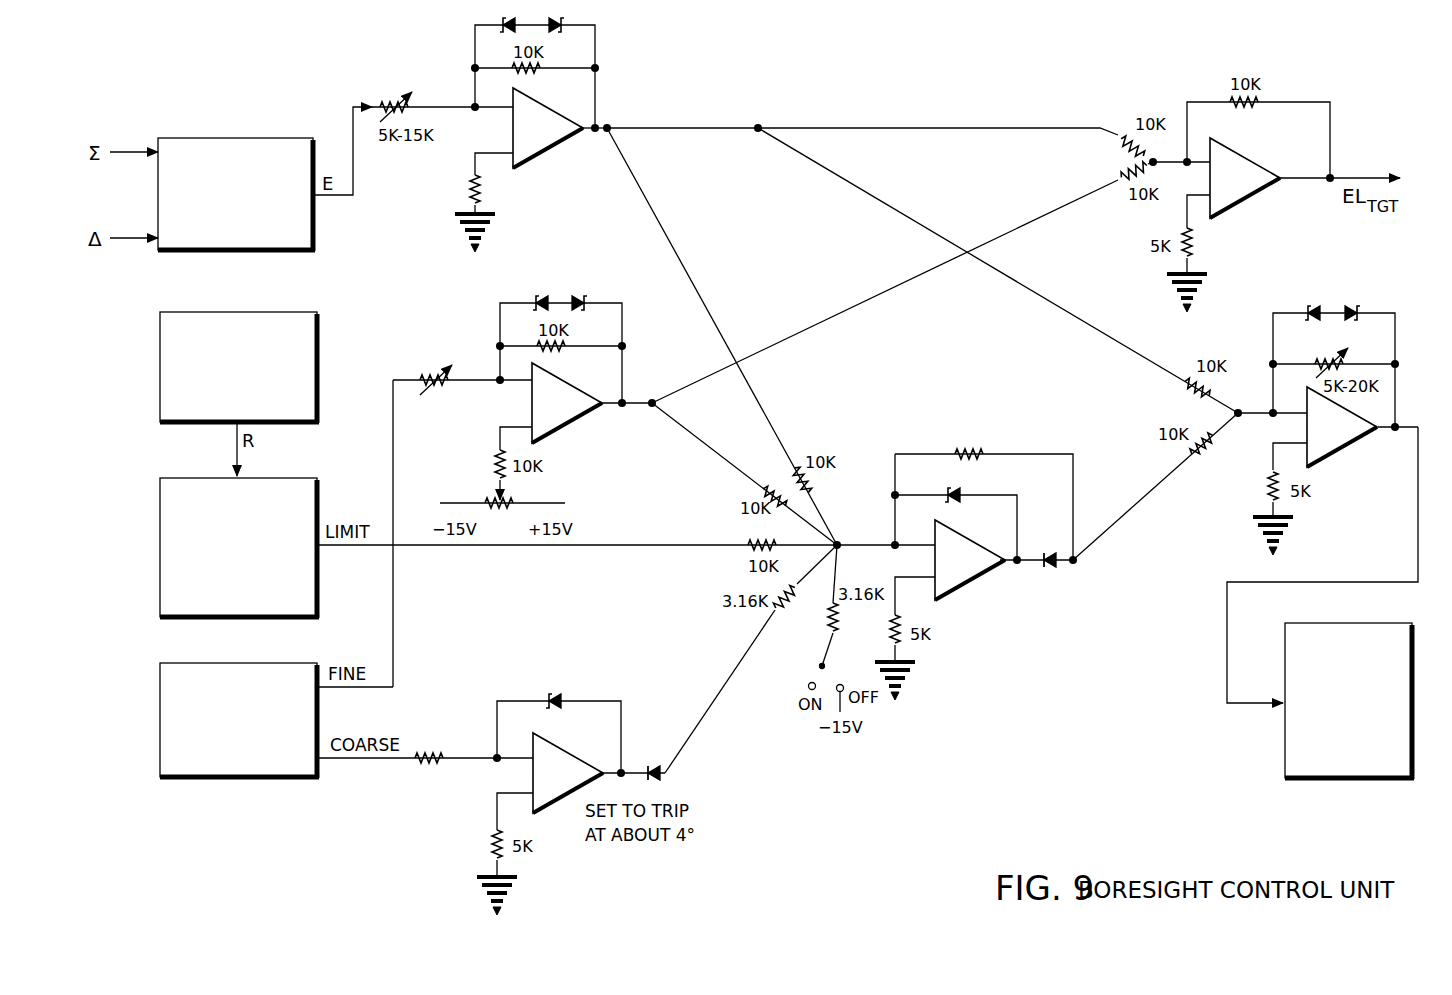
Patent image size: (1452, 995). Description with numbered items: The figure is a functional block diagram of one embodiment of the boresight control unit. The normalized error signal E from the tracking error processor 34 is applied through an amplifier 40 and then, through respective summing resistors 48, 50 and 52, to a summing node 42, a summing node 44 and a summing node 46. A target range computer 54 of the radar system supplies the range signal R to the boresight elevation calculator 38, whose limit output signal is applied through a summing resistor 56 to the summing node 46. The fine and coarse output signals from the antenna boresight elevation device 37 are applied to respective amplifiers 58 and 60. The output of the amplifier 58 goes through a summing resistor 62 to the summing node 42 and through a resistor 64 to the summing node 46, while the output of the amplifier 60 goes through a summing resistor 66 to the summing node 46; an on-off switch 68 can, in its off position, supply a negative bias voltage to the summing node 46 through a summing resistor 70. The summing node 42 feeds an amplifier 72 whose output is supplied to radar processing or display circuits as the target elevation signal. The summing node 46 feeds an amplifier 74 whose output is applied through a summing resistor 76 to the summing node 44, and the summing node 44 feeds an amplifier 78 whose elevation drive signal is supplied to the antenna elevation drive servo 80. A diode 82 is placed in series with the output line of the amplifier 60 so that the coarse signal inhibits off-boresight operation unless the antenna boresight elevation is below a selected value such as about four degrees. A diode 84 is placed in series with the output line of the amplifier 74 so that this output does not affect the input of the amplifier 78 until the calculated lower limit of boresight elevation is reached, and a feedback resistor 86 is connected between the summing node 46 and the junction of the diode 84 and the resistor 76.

The tracking error processor 34 is at (225, 138).
The antenna boresight elevation device 37 is at (228, 778).
The boresight elevation calculator 38 is at (308, 488).
The amplifier 40 is at (538, 158).
The summing node 42 is at (1158, 165).
The summing node 44 is at (1240, 418).
The summing node 46 is at (842, 542).
The summing resistor 48 is at (1113, 144).
The summing resistor 50 is at (1183, 388).
The summing resistor 52 is at (812, 488).
The target range computer 54 is at (310, 330).
The summing resistor 56 is at (746, 542).
The amplifier 58 is at (565, 425).
The amplifier 60 is at (568, 755).
The summing resistor 62 is at (1115, 181).
The resistor 64 is at (772, 488).
The summing resistor 66 is at (792, 606).
The on-off switch 68 is at (812, 676).
The summing resistor 70 is at (836, 628).
The amplifier 72 is at (1252, 168).
The amplifier 74 is at (960, 576).
The summing resistor 76 is at (1205, 458).
The amplifier 78 is at (1345, 450).
The antenna elevation drive servo 80 is at (1288, 641).
The diode 82 is at (652, 763).
The diode 84 is at (1047, 551).
The feedback resistor 86 is at (985, 458).